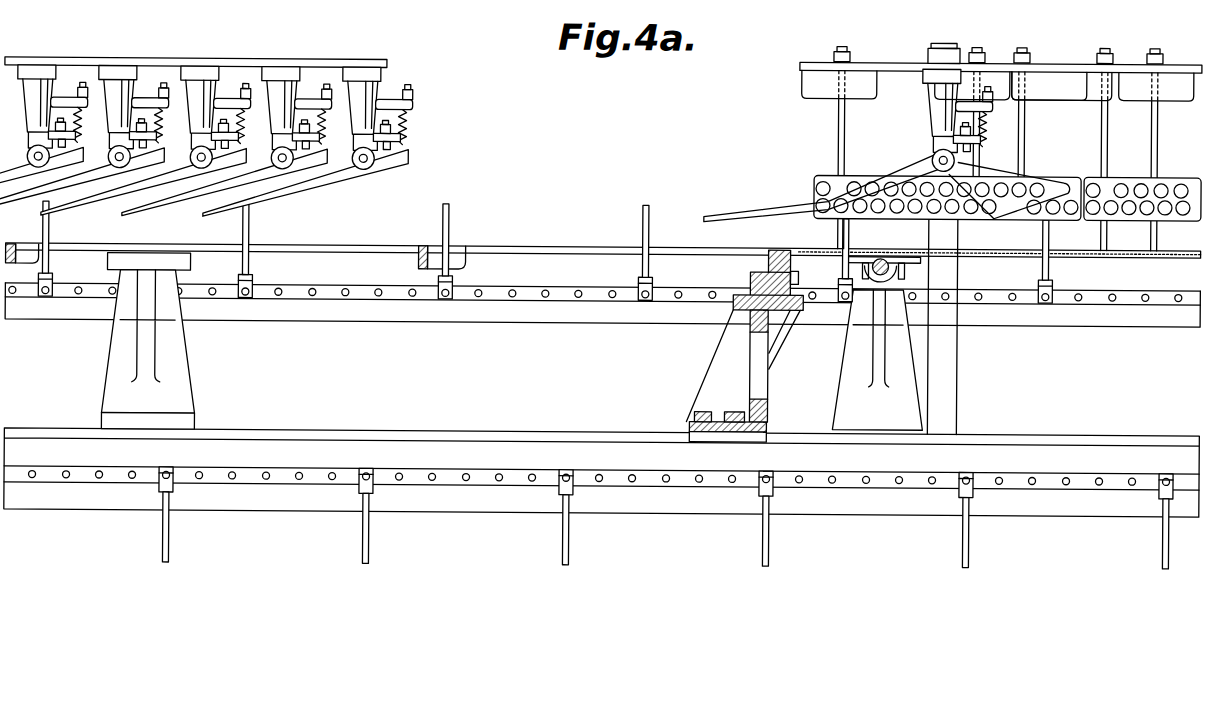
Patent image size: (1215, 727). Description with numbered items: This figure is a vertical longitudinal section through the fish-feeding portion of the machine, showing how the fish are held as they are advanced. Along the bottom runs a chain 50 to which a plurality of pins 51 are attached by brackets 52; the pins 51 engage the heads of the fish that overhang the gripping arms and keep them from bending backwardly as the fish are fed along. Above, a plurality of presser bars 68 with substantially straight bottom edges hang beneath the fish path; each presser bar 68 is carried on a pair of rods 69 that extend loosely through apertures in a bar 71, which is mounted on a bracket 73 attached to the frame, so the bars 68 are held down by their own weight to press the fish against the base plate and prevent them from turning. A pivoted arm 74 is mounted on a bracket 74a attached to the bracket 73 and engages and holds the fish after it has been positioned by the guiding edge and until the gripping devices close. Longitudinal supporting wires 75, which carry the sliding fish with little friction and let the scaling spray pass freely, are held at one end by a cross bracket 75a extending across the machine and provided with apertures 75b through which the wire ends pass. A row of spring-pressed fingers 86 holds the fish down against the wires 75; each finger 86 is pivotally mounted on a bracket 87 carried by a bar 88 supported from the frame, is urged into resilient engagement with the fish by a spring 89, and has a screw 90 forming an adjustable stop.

The chain 50 is at (566, 304).
The pins 51 is at (448, 206).
The brackets 52 is at (444, 303).
The presser bars 68 is at (875, 169).
The rods 69 is at (843, 144).
The bar 71 is at (1058, 67).
The bracket 73 is at (956, 55).
The pivoted arm 74 is at (763, 215).
The bracket 74a is at (929, 114).
The supporting wires 75 is at (541, 247).
The cross bracket 75a is at (768, 268).
The apertures 75b is at (798, 273).
The spring-pressed fingers 86 is at (91, 205).
The bracket 87 is at (352, 70).
The bar 88 is at (177, 61).
The spring 89 is at (406, 128).
The screw 90 is at (142, 152).